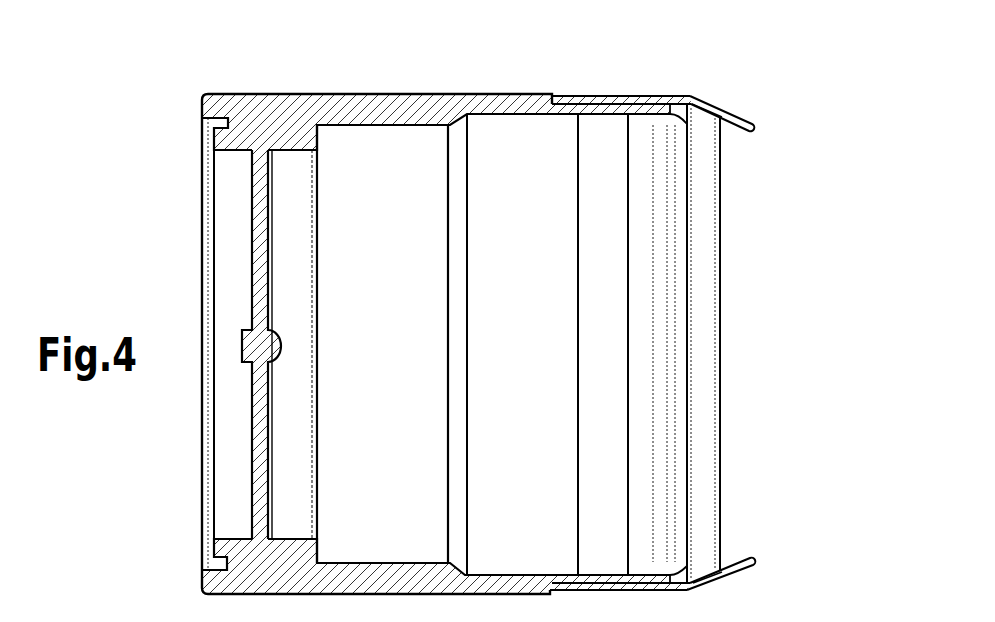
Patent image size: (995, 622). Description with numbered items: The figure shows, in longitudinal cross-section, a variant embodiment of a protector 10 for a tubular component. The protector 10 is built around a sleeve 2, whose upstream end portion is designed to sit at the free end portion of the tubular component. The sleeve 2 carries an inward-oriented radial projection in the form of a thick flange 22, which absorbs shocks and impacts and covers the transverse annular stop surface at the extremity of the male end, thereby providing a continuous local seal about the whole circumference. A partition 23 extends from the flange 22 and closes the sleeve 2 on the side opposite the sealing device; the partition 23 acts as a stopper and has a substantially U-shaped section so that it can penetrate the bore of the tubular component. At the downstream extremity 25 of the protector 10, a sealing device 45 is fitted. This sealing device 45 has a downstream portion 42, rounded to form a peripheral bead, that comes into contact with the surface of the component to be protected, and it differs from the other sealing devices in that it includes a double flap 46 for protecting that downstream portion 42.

The protector 10 is at (276, 70).
The sleeve 2 is at (294, 113).
The thick flange 22 is at (272, 135).
The partition 23 is at (262, 426).
The downstream extremity 25 is at (611, 108).
The downstream portion 42 is at (690, 173).
The sealing device 45 is at (587, 98).
The double flap 46 is at (740, 118).